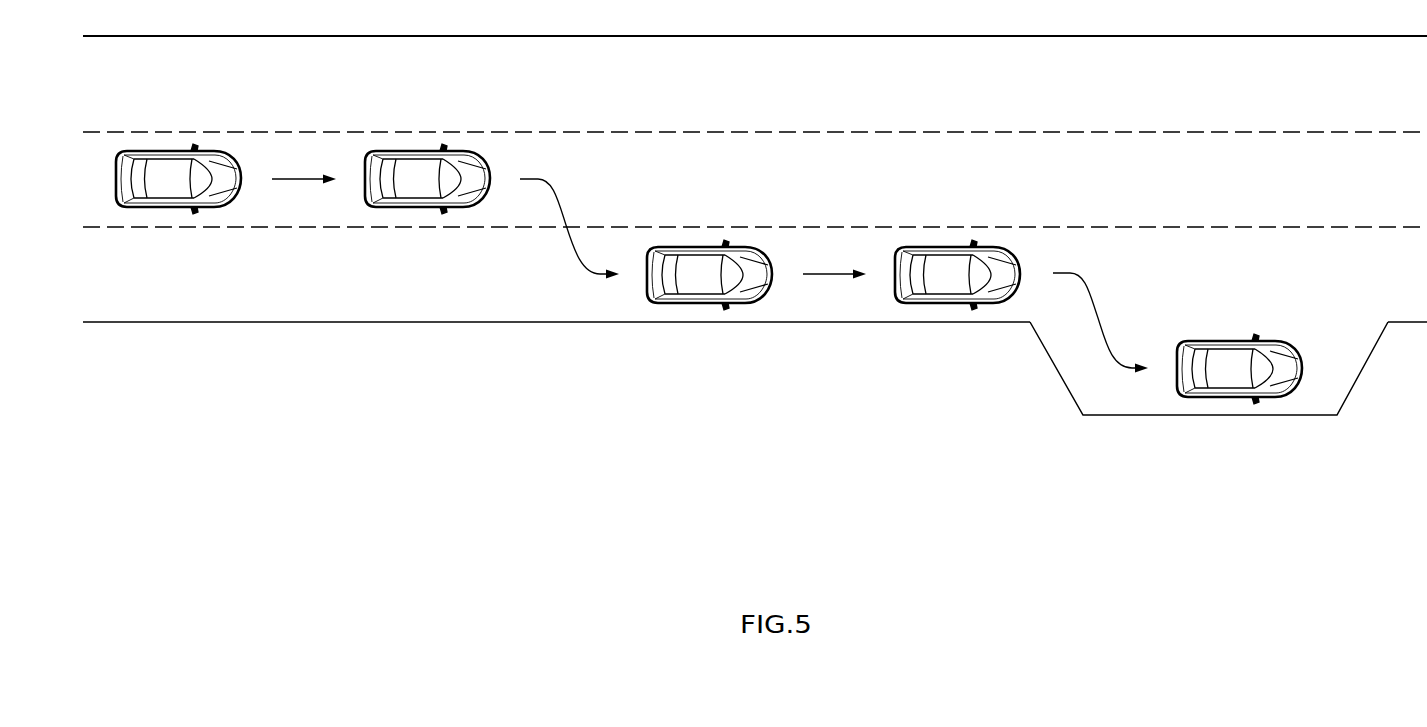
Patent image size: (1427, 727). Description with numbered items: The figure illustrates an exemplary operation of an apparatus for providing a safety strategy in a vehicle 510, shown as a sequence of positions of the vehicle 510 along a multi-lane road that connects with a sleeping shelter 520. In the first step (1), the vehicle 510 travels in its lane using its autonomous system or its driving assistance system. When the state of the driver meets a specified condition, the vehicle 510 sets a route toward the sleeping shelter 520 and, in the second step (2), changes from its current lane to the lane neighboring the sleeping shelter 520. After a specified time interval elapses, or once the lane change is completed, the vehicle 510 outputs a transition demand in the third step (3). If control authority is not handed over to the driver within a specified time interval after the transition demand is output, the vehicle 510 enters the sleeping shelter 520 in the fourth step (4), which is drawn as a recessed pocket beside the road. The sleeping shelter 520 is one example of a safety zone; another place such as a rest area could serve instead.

The vehicle 510 is at (170, 205).
The sleeping shelter 520 is at (1342, 369).
The autonomous traveling step 1 is at (304, 165).
The lane change step 2 is at (569, 229).
The TD output step 3 is at (834, 262).
The sleeping shelter entry step 4 is at (1100, 323).